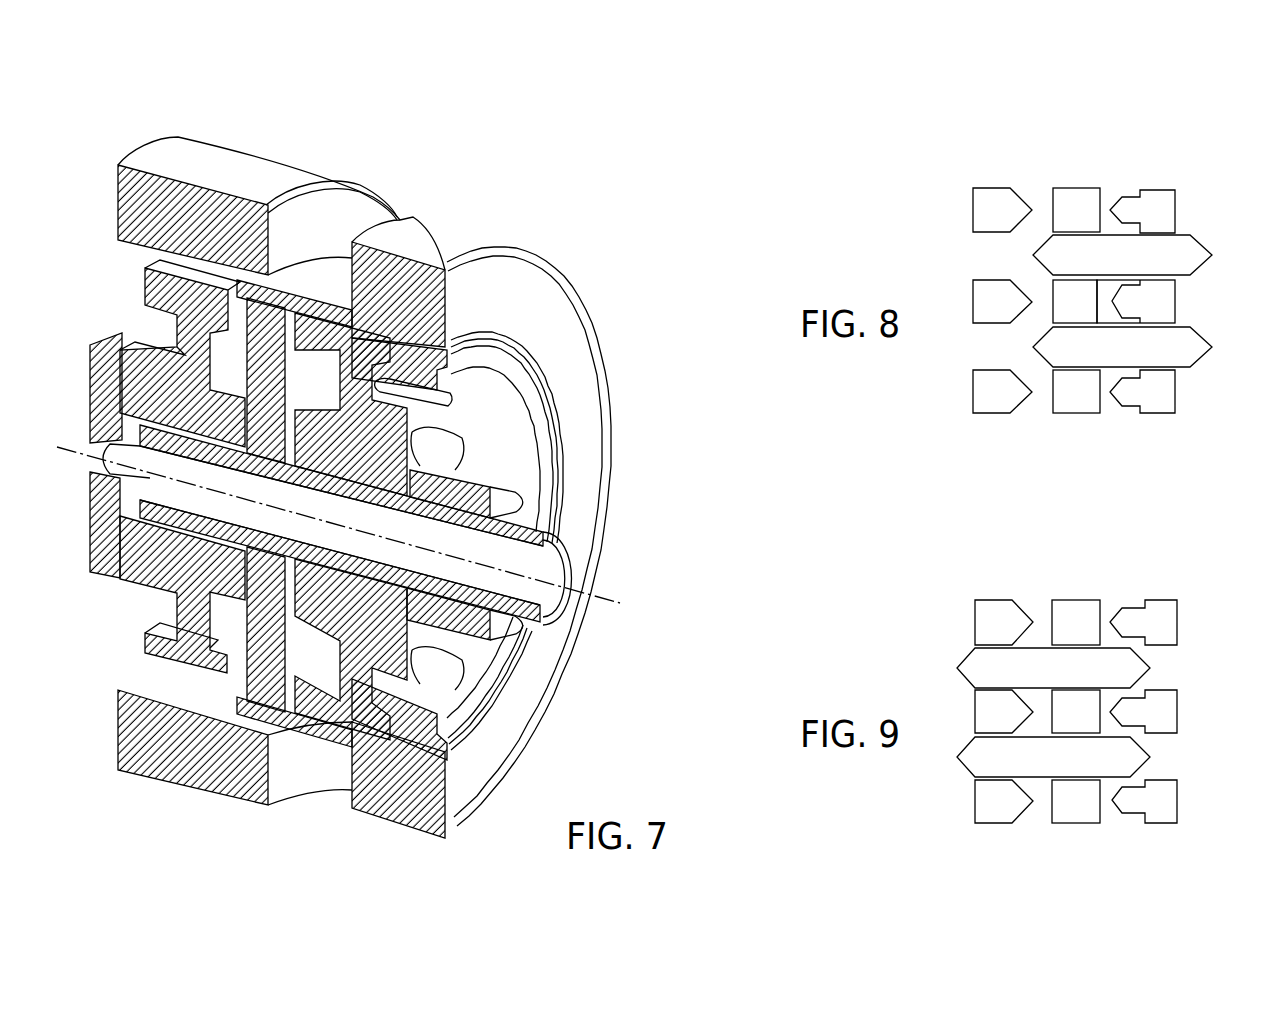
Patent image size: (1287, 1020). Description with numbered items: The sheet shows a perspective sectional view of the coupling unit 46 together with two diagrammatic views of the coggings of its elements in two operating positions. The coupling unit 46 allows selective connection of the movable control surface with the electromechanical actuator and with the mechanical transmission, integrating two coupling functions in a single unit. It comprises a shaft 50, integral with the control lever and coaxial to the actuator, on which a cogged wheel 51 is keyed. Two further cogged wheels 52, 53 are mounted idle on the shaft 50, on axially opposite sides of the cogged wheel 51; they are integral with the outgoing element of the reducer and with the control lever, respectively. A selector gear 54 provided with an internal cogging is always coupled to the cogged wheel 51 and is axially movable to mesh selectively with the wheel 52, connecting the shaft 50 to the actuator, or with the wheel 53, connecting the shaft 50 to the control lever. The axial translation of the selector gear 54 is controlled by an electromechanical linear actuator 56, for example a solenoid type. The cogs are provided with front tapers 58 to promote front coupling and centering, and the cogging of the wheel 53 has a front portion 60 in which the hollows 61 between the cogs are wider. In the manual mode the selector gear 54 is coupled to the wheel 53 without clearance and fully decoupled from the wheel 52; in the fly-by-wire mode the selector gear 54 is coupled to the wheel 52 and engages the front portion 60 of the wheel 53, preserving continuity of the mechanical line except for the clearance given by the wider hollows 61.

In FIG. 7, the coupling unit 46 is at (568, 228).
In FIG. 7, the shaft 50 is at (577, 613).
In FIG. 7, the cogged wheel 51 is at (263, 633).
In FIG. 8, the cogged wheel 51 is at (1073, 183).
In FIG. 9, the cogged wheel 51 is at (1078, 595).
In FIG. 7, the cogged wheel 52 is at (147, 292).
In FIG. 8, the cogged wheel 52 is at (990, 183).
In FIG. 9, the cogged wheel 52 is at (988, 595).
In FIG. 7, the cogged wheel 53 is at (513, 420).
In FIG. 8, the cogged wheel 53 is at (1153, 183).
In FIG. 9, the cogged wheel 53 is at (1158, 595).
In FIG. 7, the selector gear 54 is at (438, 243).
In FIG. 8, the selector gear 54 is at (1108, 375).
In FIG. 9, the selector gear 54 is at (1038, 786).
In FIG. 7, the electromechanical linear actuator 56 is at (256, 172).
In FIG. 8, the front tapers 58 is at (1017, 197).
In FIG. 9, the front tapers 58 is at (1018, 612).
In FIG. 8, the front portion 60 is at (1150, 395).
In FIG. 9, the front portion 60 is at (1132, 805).
In FIG. 8, the hollows 61 is at (1135, 240).
In FIG. 9, the hollows 61 is at (1124, 649).